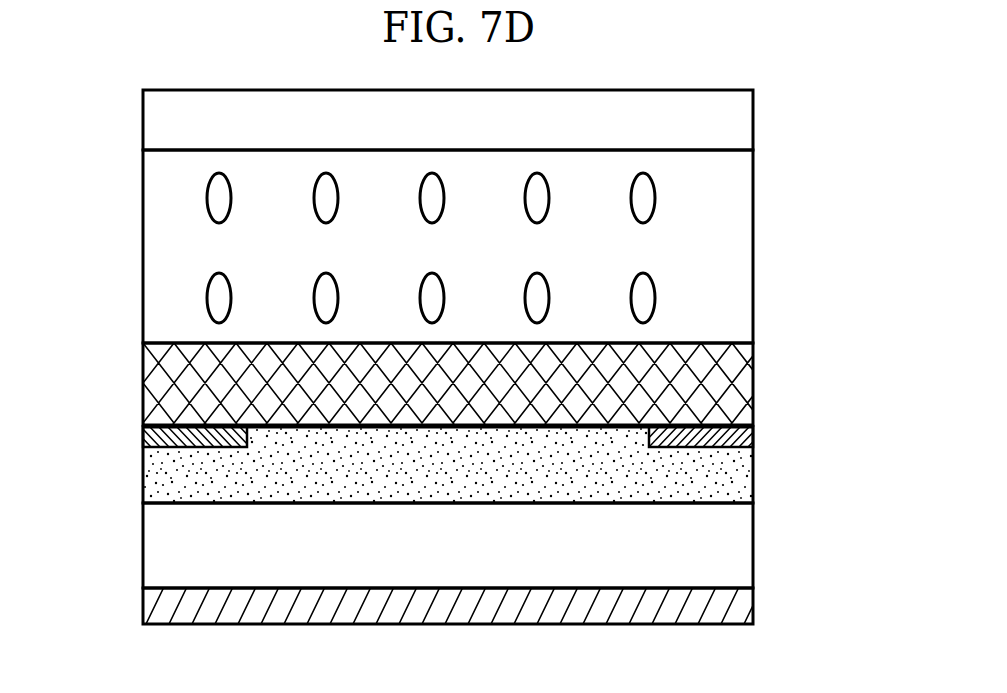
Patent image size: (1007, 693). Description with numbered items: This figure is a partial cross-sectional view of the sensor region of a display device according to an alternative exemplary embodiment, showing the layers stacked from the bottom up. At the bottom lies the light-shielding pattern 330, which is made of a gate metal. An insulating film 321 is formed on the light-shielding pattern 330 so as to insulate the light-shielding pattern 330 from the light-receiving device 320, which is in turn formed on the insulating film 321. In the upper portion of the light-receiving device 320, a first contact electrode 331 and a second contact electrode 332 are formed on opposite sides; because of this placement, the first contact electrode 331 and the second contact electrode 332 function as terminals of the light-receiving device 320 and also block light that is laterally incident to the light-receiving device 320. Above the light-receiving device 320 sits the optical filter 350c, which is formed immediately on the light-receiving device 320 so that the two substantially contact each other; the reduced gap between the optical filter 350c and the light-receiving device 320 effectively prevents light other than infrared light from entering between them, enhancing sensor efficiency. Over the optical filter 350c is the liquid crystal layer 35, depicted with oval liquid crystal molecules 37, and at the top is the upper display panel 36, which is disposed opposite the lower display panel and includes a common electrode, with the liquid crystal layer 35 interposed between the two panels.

The upper display panel 36 is at (725, 134).
The color filter / pattern 37 is at (646, 198).
The liquid crystal layer 35 is at (494, 246).
The optical filter 350c is at (730, 387).
The first contact electrode 331 is at (752, 437).
The second contact electrode 332 is at (157, 434).
The light-receiving device 320 is at (727, 488).
The insulating film 321 is at (725, 555).
The light-shielding pattern 330 is at (725, 615).